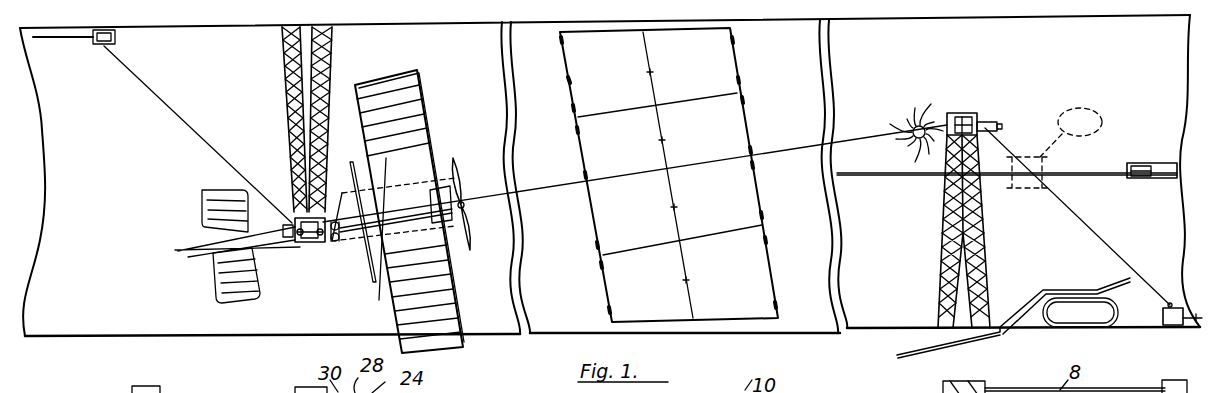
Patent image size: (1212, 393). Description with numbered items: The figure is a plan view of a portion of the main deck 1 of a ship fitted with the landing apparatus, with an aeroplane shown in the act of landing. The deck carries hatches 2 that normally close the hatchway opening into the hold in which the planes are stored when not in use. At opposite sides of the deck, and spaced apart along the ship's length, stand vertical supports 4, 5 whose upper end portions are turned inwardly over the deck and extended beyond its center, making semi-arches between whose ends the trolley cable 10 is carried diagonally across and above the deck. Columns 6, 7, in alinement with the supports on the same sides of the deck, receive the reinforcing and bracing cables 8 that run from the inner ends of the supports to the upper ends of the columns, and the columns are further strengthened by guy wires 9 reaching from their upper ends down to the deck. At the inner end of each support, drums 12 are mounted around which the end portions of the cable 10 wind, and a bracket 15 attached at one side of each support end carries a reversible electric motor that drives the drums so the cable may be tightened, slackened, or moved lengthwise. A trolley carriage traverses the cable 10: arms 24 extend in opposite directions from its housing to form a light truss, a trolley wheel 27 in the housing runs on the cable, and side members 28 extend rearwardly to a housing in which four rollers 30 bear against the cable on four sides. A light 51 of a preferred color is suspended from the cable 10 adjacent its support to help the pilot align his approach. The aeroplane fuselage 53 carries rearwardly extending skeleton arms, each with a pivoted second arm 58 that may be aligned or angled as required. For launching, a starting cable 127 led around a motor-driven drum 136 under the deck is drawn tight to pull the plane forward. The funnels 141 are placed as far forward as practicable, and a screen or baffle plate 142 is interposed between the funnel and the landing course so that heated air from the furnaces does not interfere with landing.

The main deck 1 is at (813, 318).
The hatches 2 is at (613, 222).
The vertical support 4 is at (290, 105).
The vertical support 5 is at (985, 205).
The column 6 is at (117, 39).
The column 7 is at (1165, 322).
The reinforcing and bracing cables 8 is at (165, 104).
The guy wires 9 is at (62, 40).
The cable 10 is at (640, 178).
The drums 12 is at (305, 243).
The bracket 15 is at (288, 239).
The arms 24 is at (372, 270).
The trolley wheel 27 is at (372, 223).
The side members 28 is at (388, 236).
The rollers 30 is at (297, 217).
The light 51 is at (915, 120).
The aeroplane fuselage 53 is at (334, 244).
The second arm 58 is at (372, 192).
The cable 127 is at (898, 175).
The drum 136 is at (1054, 148).
The funnels 141 is at (1100, 330).
The screen or baffle plate 142 is at (1030, 303).